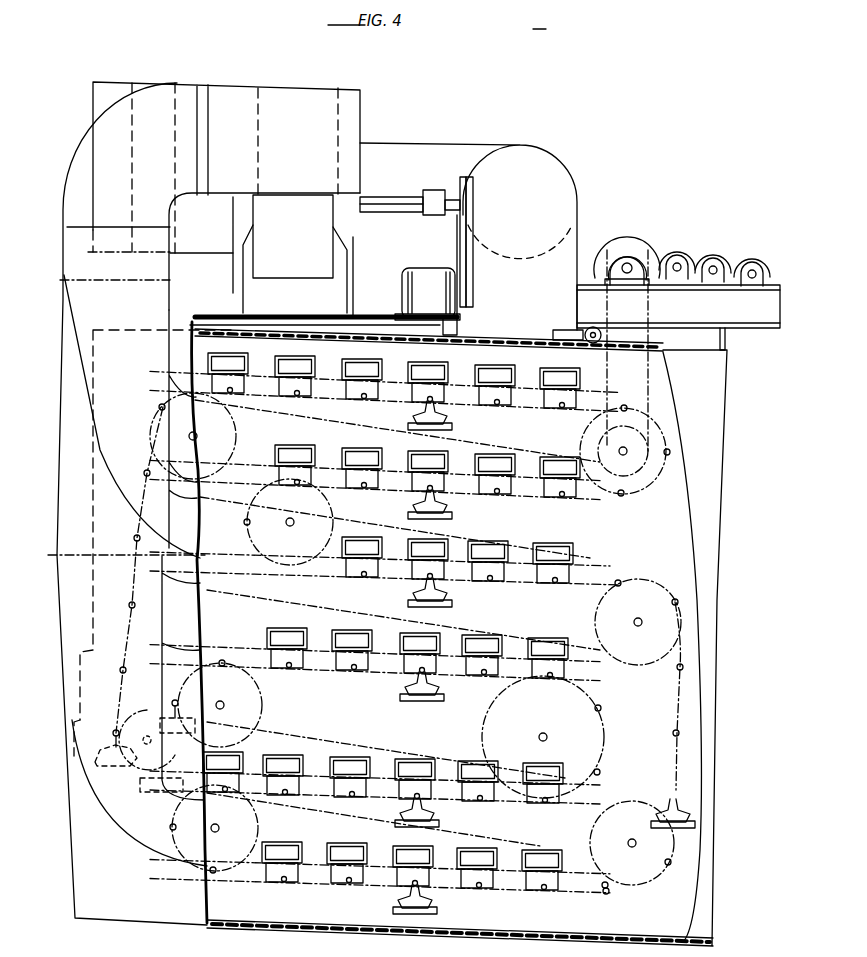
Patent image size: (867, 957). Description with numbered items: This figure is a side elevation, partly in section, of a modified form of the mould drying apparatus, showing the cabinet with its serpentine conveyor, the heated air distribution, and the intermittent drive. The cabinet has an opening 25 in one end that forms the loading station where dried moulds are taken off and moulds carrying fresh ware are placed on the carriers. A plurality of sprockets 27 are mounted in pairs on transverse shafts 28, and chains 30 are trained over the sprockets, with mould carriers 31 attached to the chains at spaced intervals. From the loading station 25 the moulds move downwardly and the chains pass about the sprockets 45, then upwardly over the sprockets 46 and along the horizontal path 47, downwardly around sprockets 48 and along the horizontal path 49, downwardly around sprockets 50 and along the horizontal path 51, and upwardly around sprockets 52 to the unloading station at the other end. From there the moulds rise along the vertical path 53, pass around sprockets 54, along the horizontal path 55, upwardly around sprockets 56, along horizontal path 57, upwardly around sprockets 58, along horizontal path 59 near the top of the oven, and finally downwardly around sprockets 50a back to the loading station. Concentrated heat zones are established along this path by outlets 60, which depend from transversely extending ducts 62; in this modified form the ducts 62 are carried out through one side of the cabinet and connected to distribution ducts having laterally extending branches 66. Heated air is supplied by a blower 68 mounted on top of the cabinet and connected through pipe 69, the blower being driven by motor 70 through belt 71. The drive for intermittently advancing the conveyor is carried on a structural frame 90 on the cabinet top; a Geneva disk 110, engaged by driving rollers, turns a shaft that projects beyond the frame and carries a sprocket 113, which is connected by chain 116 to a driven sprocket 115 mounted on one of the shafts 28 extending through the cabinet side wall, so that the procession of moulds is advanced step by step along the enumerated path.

The opening 25 is at (73, 741).
The sprockets 27 is at (477, 733).
The shafts 28 is at (203, 431).
The chains 30 is at (603, 580).
The mould carriers 31 is at (398, 704).
The sprockets 45 is at (140, 712).
The sprockets 46 is at (261, 691).
The horizontal path 47 is at (312, 667).
The sprockets 48 is at (603, 728).
The horizontal path 49 is at (380, 790).
The sprockets 50 is at (177, 837).
The sprockets 50a is at (235, 440).
The horizontal path 51 is at (380, 876).
The sprockets 52 is at (648, 875).
The vertical path 53 is at (678, 697).
The sprockets 54 is at (596, 612).
The horizontal path 55 is at (443, 585).
The sprockets 56 is at (250, 534).
The horizontal path 57 is at (452, 492).
The sprockets 58 is at (637, 486).
The horizontal path 59 is at (448, 405).
The outlets 60 is at (566, 571).
The duct 62 is at (561, 544).
The laterally extending branches 66 is at (202, 586).
The blower 68 is at (264, 255).
The pipe 69 is at (226, 167).
The motor 70 is at (427, 294).
The belt 71 is at (474, 268).
The structural frame 90 is at (678, 306).
The Geneva disk 110 is at (619, 243).
The sprocket 113 is at (640, 258).
The driven sprocket 115 is at (644, 443).
The chain 116 is at (646, 373).